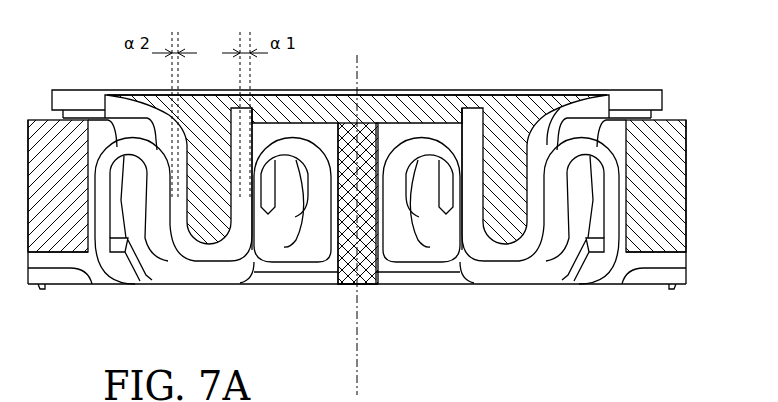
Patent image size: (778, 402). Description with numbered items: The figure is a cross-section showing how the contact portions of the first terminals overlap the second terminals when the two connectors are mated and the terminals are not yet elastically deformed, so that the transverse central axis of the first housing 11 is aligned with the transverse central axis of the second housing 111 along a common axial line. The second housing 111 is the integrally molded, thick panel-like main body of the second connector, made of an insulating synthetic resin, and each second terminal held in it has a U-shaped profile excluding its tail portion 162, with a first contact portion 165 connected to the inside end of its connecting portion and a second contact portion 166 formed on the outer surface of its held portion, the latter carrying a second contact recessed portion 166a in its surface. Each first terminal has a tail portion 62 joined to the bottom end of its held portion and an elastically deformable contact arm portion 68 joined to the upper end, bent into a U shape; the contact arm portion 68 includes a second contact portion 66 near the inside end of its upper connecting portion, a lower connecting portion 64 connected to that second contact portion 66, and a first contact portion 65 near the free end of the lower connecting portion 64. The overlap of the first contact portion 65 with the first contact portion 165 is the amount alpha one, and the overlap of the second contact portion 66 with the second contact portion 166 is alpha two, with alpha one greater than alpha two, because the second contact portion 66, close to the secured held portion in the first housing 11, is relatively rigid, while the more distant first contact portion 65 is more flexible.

The first housing 11 is at (687, 211).
The tail portion 62 is at (625, 288).
The lower connecting portion 64 is at (493, 284).
The first contact portion 65 is at (484, 218).
The second contact portion 66 is at (548, 284).
The contact arm portion 68 is at (477, 170).
The second housing 111 is at (428, 95).
The tail portion 162 is at (643, 90).
The first contact portion 165 is at (472, 108).
The second contact portion 166 is at (534, 150).
The second contact recessed portion 166a is at (502, 140).